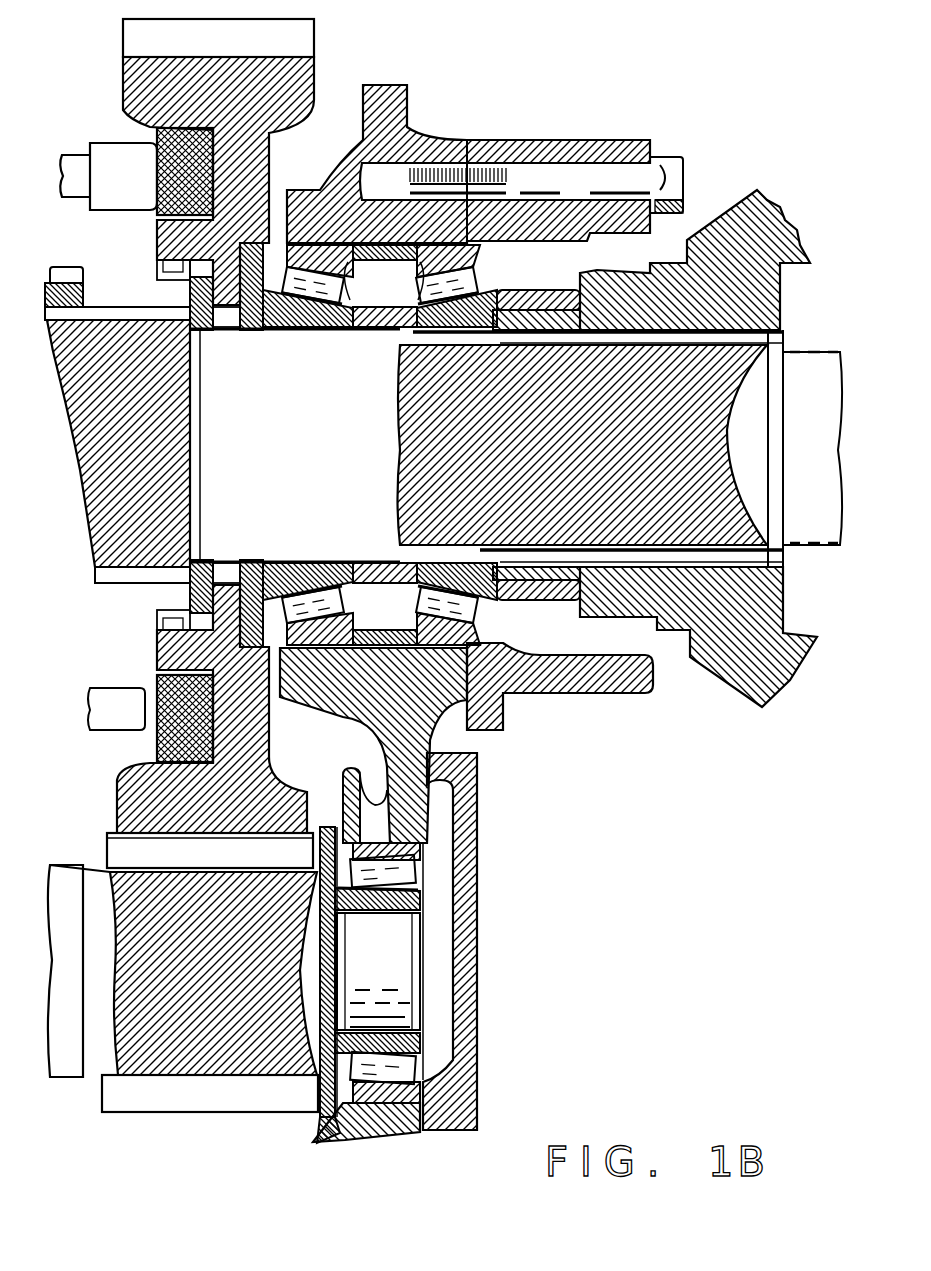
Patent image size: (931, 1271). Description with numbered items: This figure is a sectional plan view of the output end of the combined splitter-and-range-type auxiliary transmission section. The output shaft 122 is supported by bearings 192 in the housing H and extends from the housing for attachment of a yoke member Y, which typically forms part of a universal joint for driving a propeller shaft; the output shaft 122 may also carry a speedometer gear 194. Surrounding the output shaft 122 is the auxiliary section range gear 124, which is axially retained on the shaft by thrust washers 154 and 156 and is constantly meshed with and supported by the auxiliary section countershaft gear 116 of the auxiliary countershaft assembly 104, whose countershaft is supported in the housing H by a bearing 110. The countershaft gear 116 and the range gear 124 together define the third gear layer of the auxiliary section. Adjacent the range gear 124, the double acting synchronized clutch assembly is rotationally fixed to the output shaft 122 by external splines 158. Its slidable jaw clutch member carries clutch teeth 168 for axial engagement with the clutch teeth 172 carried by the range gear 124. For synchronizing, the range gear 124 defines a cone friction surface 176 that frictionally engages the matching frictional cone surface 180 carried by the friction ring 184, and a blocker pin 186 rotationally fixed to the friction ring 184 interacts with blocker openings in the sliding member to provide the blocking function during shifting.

The auxiliary countershaft assembly 104 is at (63, 1080).
The bearing 110 is at (403, 960).
The auxiliary section countershaft gear 116 is at (107, 857).
The output shaft 122 is at (620, 448).
The auxiliary section range gear 124 is at (140, 797).
The thrust washer 154 is at (185, 323).
The thrust washer 156 is at (251, 312).
The external splines 158 is at (150, 578).
The clutch teeth 168 is at (68, 273).
The clutch teeth 172 is at (163, 617).
The cone friction surface 176 is at (175, 130).
The frictional cone surface 180 is at (206, 127).
The friction ring 184 is at (160, 740).
The blocker pin 186 is at (120, 157).
The bearing 192 is at (362, 333).
The speedometer gear 194 is at (533, 290).
The housing H is at (390, 100).
The yoke member Y is at (770, 231).